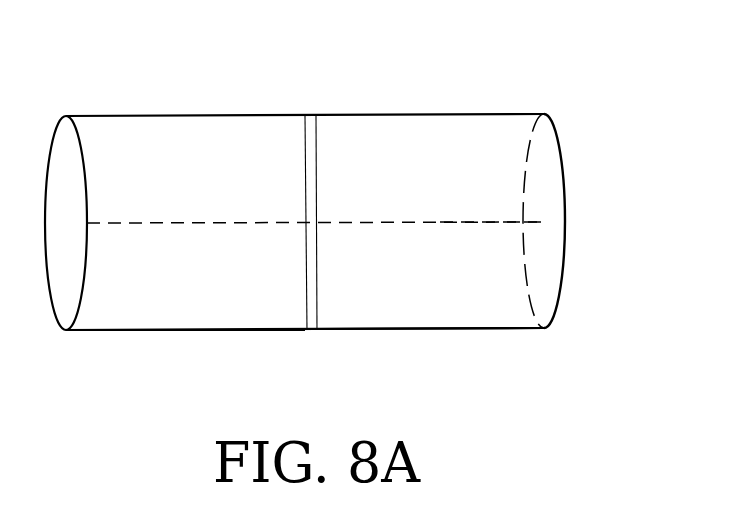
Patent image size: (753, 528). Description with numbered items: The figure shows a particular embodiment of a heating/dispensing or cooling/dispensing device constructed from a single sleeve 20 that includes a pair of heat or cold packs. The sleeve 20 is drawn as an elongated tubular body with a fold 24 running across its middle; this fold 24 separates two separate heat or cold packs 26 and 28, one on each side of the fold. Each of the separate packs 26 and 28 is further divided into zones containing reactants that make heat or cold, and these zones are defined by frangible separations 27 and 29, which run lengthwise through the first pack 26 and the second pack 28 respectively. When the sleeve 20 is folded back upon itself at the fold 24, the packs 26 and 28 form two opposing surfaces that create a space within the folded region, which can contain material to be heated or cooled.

The sleeve 20 is at (499, 90).
The fold 24 is at (313, 348).
The heat or cold pack 26 is at (147, 303).
The frangible separation 27 is at (198, 223).
The heat or cold pack 28 is at (458, 307).
The frangible separation 29 is at (456, 218).